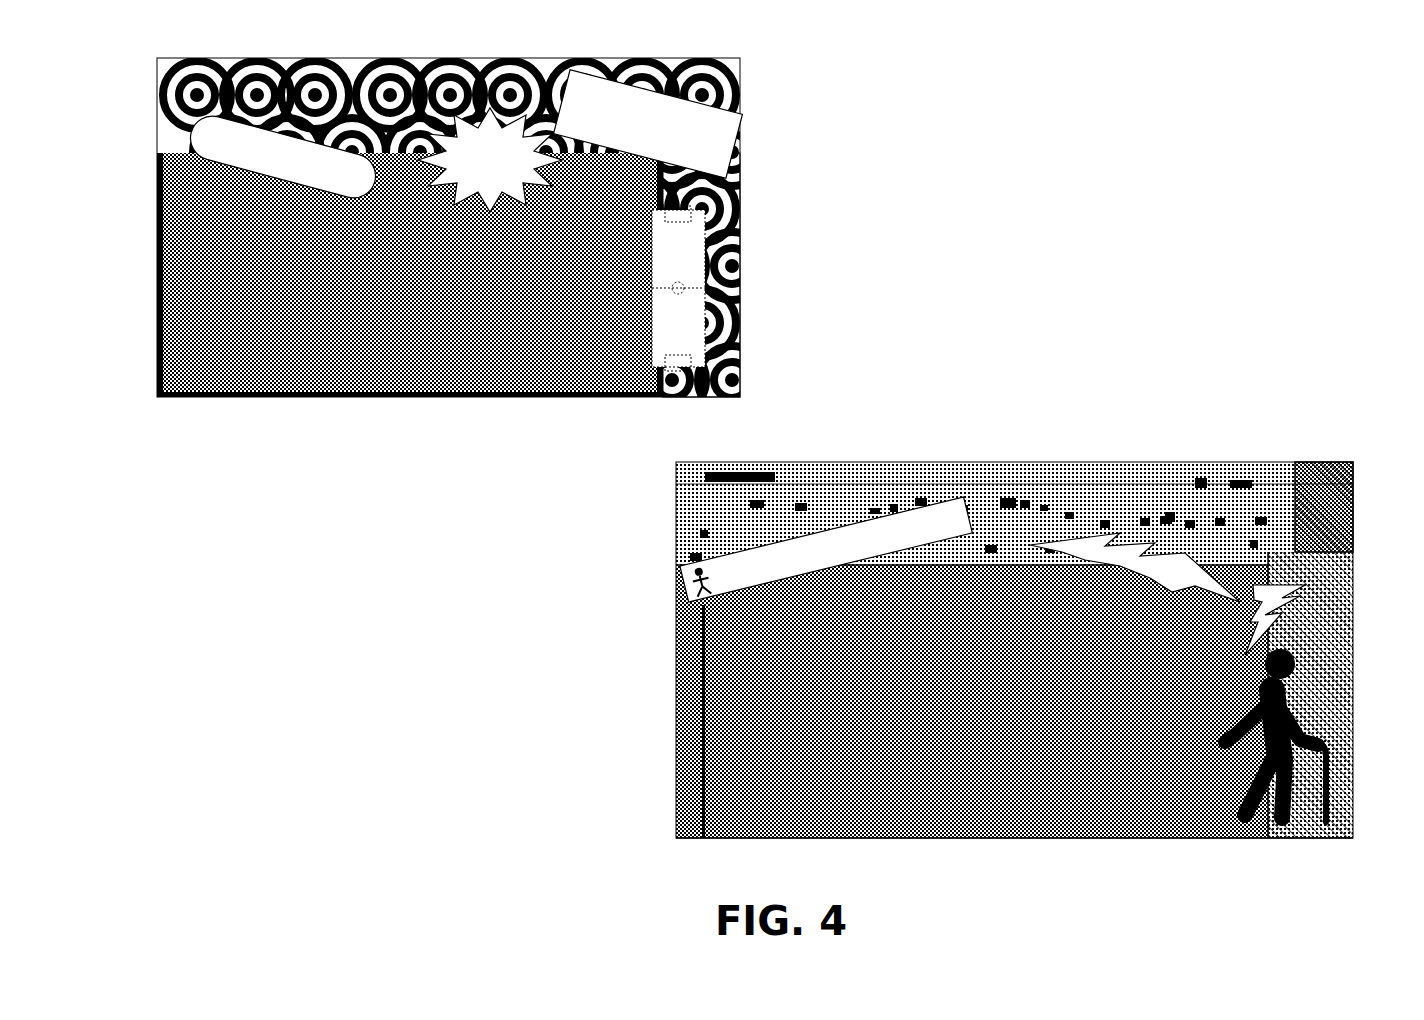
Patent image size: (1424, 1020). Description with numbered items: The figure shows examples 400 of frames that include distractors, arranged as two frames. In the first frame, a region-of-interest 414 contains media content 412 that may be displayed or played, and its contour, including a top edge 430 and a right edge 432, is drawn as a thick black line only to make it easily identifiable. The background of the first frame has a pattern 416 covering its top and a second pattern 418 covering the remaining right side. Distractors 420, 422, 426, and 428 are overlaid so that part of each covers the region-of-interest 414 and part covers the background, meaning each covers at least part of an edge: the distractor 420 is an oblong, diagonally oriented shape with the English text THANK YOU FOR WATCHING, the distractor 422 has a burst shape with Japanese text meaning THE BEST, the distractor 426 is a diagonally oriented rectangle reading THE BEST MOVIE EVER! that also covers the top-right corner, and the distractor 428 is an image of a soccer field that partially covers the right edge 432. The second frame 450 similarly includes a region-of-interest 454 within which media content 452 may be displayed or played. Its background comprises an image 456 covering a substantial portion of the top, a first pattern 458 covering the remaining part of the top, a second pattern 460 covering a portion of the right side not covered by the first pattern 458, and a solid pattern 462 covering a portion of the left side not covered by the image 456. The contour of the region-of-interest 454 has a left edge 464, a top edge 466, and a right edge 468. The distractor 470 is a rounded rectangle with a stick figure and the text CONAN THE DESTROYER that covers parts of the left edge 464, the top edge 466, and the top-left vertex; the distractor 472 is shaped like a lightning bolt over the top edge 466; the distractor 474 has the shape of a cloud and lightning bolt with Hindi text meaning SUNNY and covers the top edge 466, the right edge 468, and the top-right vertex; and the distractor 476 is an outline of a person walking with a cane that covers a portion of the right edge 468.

The examples of frames that include distractors 400 is at (1222, 106).
The media content 412 is at (157, 210).
The region-of-interest 414 is at (210, 412).
The pattern 416 is at (455, 58).
The second pattern 418 is at (740, 330).
The distractor 420 is at (283, 157).
The distractor 422 is at (490, 160).
The distractor 426 is at (648, 124).
The distractor 428 is at (678, 286).
The top edge 430 is at (157, 130).
The right edge 432 is at (678, 377).
The second frame 450 is at (560, 527).
The media content 452 is at (676, 818).
The region-of-interest 454 is at (961, 860).
The image 456 is at (872, 462).
The first pattern 458 is at (1343, 462).
The second pattern 460 is at (1348, 612).
The solid pattern 462 is at (676, 702).
The left edge 464 is at (676, 630).
The top edge 466 is at (1028, 540).
The right edge 468 is at (1350, 668).
The distractor 470 is at (925, 498).
The distractor 472 is at (1118, 538).
The distractor 474 is at (1265, 545).
The distractor 476 is at (1277, 840).